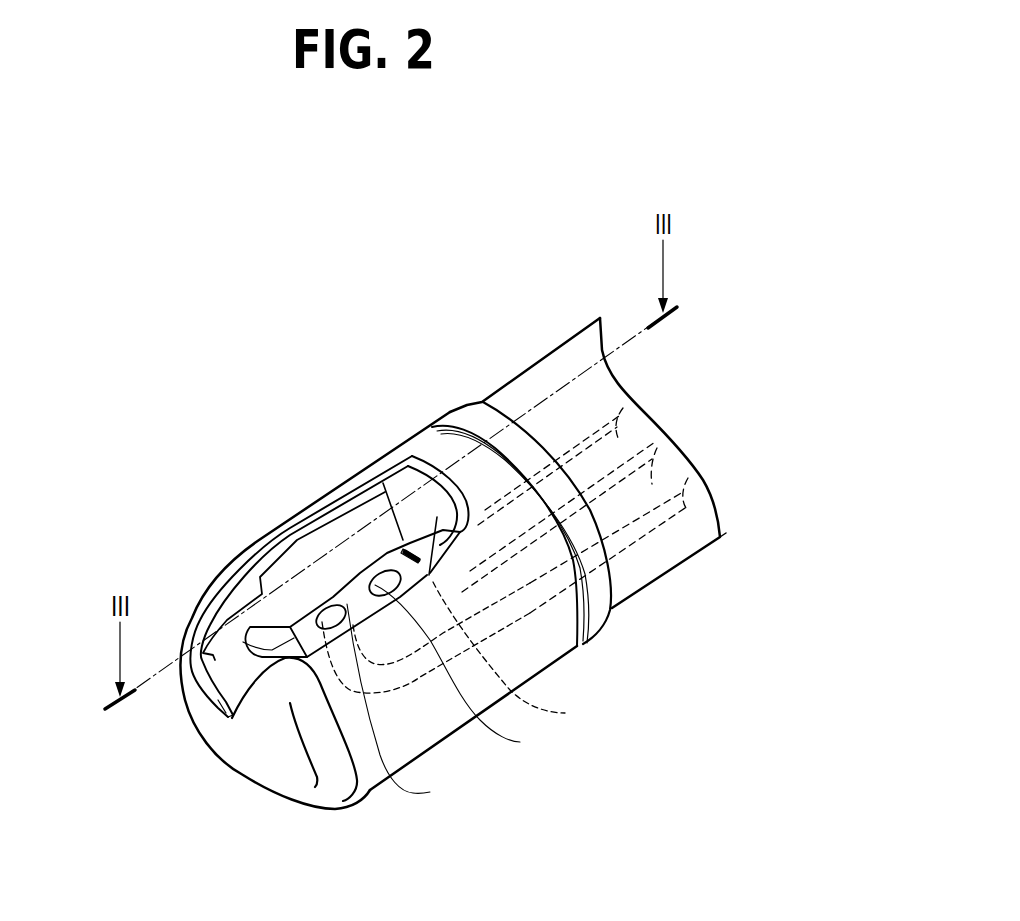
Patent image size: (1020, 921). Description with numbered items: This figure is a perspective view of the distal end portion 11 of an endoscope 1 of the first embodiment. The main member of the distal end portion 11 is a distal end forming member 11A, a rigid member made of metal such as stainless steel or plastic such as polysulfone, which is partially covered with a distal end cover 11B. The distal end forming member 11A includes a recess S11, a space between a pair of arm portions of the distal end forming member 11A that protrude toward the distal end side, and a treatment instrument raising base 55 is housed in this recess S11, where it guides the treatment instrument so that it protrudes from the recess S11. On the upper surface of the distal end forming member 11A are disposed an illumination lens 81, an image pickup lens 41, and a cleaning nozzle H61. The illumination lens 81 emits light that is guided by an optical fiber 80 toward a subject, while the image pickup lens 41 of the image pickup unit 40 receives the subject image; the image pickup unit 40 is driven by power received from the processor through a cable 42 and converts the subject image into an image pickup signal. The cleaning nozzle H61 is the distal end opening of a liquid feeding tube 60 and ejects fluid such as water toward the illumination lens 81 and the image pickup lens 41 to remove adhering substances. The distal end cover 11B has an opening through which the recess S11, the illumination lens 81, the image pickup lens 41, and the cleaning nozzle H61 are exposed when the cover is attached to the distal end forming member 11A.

The endoscope 1 is at (203, 314).
The distal end portion 11 is at (354, 388).
The distal end forming member 11A is at (313, 527).
The distal end cover 11B is at (357, 482).
The recess S11 is at (287, 550).
The treatment instrument raising base 55 is at (273, 626).
The cleaning nozzle H61 is at (420, 560).
The liquid feeding tube 60 is at (623, 408).
The cable 42 is at (657, 448).
The optical fiber 80 is at (688, 478).
The image pickup unit 40 is at (565, 713).
The image pickup lens 41 is at (520, 742).
The illumination lens 81 is at (430, 792).